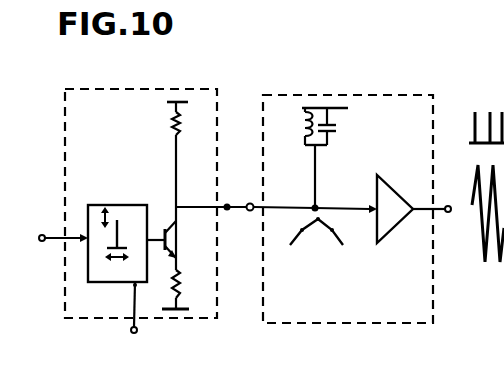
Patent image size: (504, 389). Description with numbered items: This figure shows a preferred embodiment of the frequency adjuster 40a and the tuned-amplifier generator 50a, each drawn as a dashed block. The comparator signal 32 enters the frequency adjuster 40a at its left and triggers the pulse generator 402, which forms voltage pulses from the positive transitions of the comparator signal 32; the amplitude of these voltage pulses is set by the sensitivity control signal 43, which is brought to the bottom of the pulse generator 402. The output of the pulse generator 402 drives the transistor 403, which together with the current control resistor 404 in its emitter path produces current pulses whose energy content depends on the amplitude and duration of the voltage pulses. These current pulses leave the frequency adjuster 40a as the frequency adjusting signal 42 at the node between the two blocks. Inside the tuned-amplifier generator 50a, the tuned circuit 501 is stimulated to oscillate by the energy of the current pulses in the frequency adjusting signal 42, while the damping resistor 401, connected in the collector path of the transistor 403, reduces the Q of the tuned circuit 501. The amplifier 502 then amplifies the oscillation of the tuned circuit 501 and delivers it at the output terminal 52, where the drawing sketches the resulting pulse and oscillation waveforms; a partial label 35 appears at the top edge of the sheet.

The connection (partial) 35 is at (283, 0).
The frequency adjuster 40a is at (119, 83).
The comparator signal 32 is at (41, 234).
The damping resistor 401 is at (168, 128).
The pulse generator 402 is at (90, 198).
The transistor 403 is at (166, 226).
The current control resistor 404 is at (180, 283).
The frequency adjusting signal 42 is at (228, 204).
The sensitivity control signal 43 is at (139, 333).
The tuned-amplifier generator 50a is at (370, 91).
The tuned circuit 501 is at (328, 138).
The amplifier 502 is at (395, 218).
The output terminal 52 is at (446, 210).